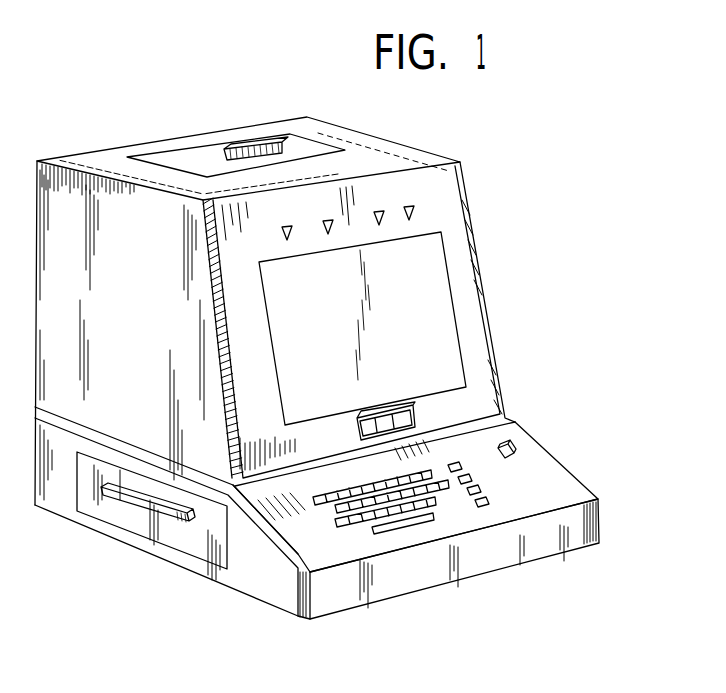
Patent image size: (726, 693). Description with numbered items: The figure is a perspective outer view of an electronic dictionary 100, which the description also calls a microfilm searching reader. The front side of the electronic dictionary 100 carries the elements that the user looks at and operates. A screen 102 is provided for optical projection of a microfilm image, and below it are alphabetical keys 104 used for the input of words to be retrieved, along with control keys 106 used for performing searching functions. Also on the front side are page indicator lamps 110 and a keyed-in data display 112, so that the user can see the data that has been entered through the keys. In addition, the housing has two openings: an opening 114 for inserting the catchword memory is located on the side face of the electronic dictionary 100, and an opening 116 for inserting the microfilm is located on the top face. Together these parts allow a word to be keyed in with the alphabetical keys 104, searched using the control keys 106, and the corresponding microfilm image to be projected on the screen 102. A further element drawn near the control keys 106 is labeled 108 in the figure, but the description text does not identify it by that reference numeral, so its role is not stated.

The electronic dictionary 100 is at (163, 102).
The screen 102 is at (448, 267).
The alphabetical keys 104 is at (307, 550).
The control keys 106 is at (493, 496).
The switch 108 is at (516, 450).
The page indicator lamps 110 is at (424, 209).
The keyed-in data display 112 is at (420, 416).
The opening for inserting the catchword memory 114 is at (181, 551).
The opening for inserting the microfilm 116 is at (273, 133).